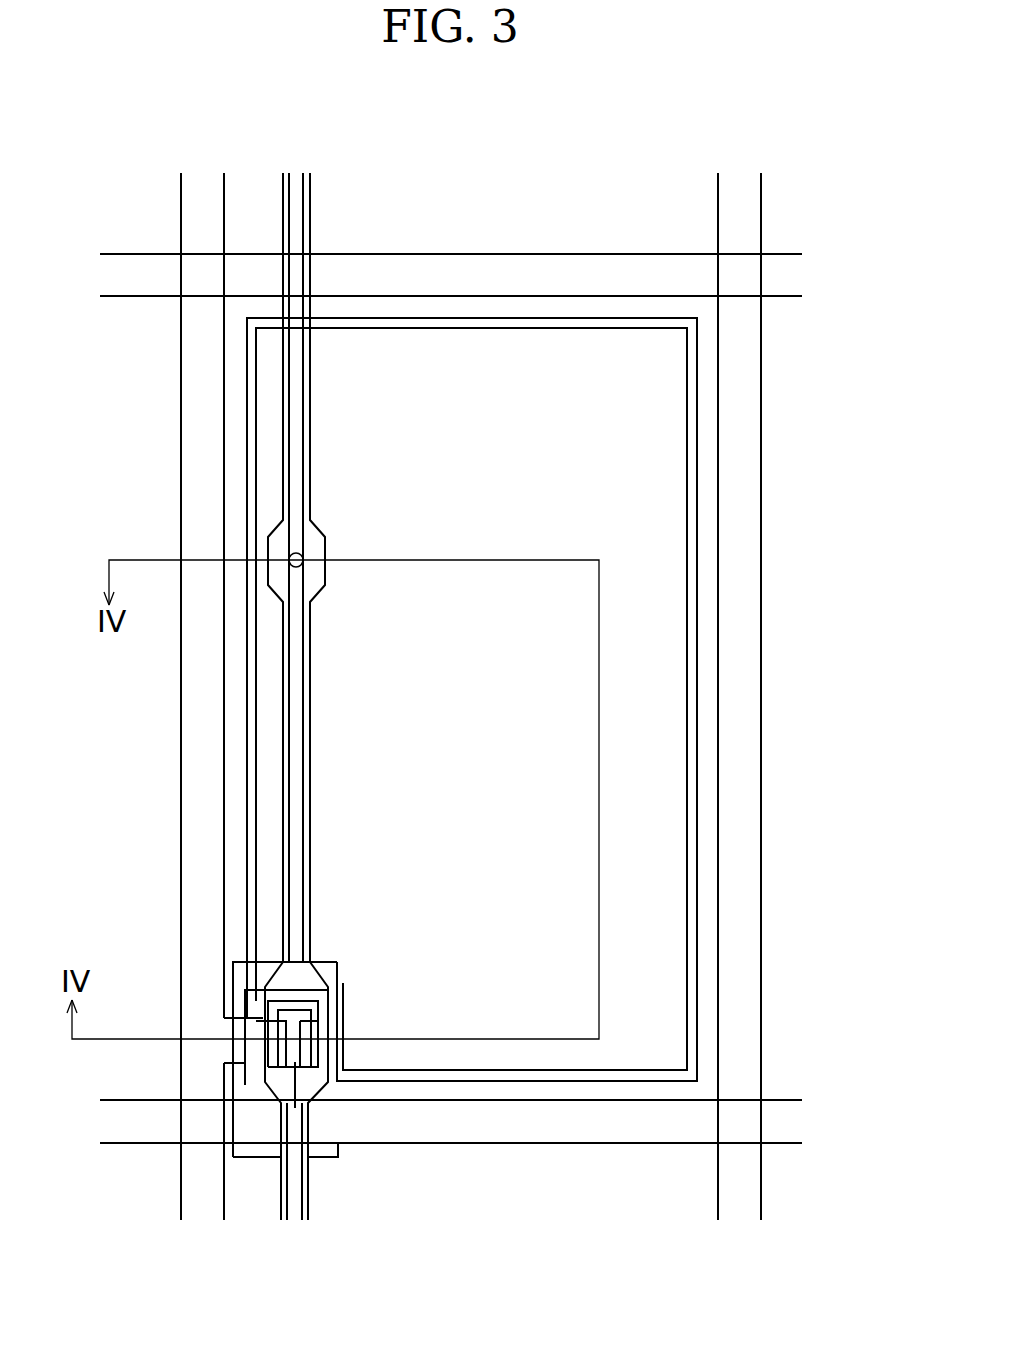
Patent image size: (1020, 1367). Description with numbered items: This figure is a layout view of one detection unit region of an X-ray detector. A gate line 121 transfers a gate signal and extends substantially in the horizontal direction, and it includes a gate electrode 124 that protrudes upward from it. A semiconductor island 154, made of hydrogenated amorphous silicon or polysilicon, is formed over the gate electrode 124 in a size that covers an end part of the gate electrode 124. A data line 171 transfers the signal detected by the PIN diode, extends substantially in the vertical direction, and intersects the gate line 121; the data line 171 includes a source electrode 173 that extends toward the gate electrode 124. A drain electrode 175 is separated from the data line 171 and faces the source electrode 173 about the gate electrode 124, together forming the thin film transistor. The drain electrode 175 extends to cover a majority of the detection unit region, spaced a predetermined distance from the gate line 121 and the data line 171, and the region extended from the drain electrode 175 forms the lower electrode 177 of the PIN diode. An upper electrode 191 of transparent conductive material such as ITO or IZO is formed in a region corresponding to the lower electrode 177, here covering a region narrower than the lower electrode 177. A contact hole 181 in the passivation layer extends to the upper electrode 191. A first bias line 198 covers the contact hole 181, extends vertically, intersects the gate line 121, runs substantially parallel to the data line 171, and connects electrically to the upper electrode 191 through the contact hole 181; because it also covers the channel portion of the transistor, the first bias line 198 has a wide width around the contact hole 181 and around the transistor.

The gate line 121 is at (788, 1117).
The data line 171 is at (205, 190).
The first bias line 198 is at (310, 197).
The contact hole 181 is at (302, 554).
The upper electrode 191 is at (256, 790).
The lower electrode 177 is at (460, 1082).
The gate electrode 124 is at (285, 1013).
The source electrode 173 is at (248, 1050).
The drain electrode 175 is at (305, 1050).
The semiconductor island 154 is at (295, 1108).